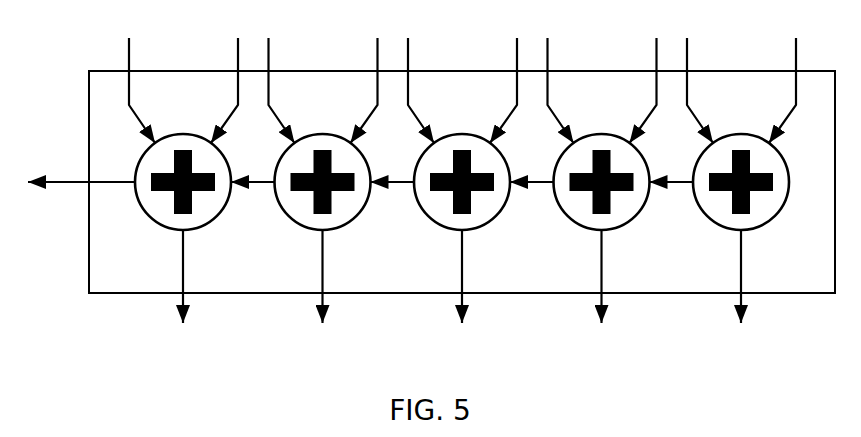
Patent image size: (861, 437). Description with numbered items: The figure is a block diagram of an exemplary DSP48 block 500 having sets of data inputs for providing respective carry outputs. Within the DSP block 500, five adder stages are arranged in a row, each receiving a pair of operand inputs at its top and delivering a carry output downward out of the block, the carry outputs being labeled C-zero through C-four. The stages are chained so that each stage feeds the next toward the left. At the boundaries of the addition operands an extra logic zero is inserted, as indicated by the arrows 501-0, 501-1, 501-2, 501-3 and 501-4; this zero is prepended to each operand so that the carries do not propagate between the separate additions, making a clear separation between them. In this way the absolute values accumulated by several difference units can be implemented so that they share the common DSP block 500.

The DSP48 block 500 is at (100, 72).
The arrow 501-4 is at (72, 190).
The arrow 501-3 is at (263, 190).
The arrow 501-2 is at (402, 190).
The arrow 501-1 is at (542, 190).
The arrow 501-0 is at (681, 190).